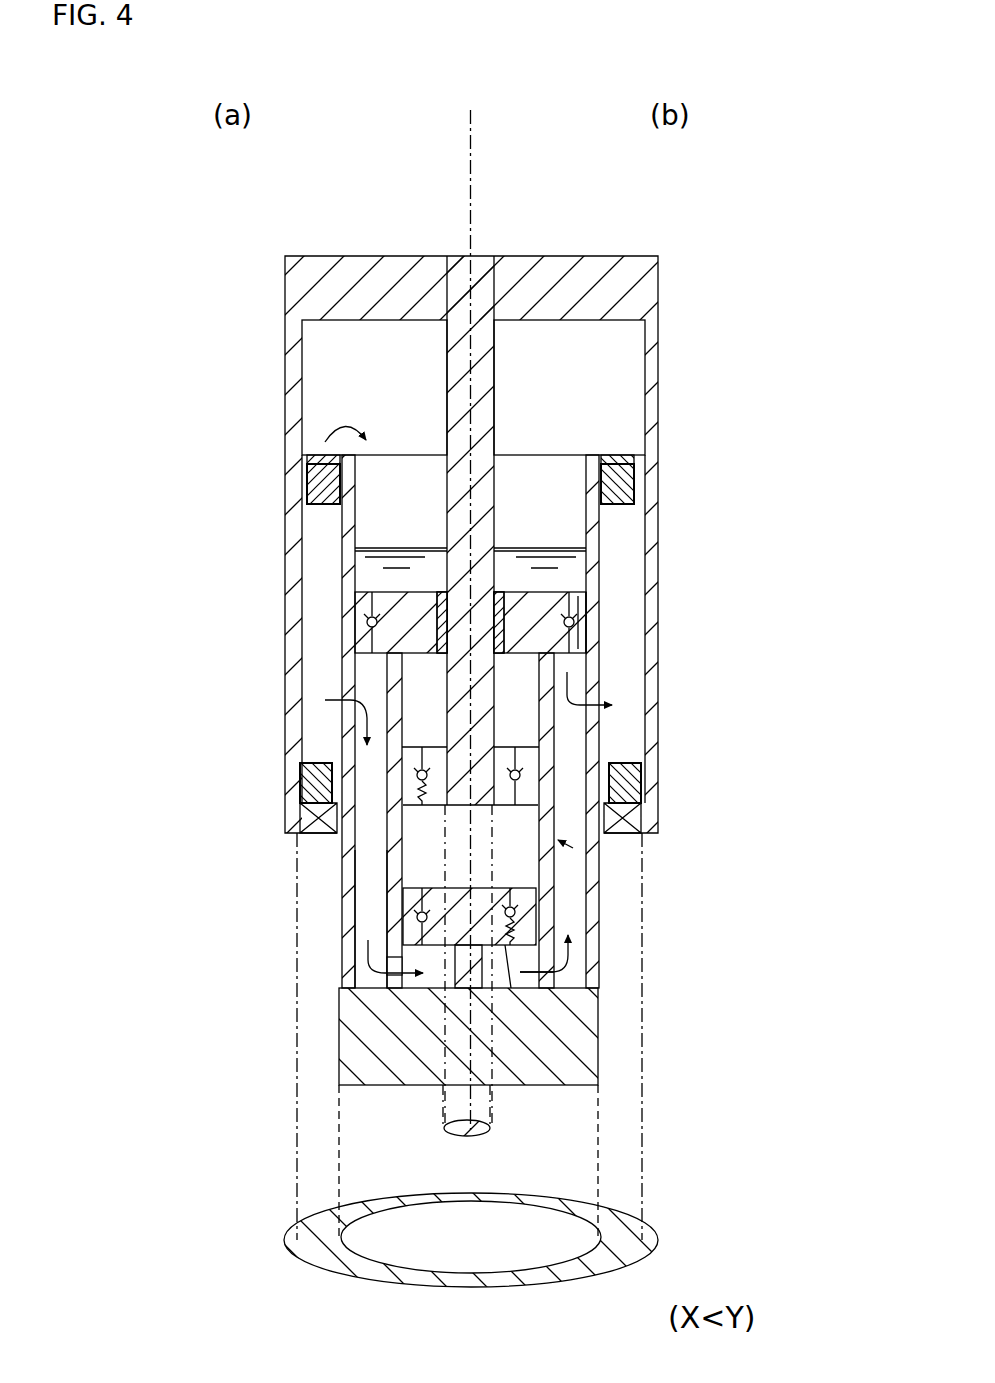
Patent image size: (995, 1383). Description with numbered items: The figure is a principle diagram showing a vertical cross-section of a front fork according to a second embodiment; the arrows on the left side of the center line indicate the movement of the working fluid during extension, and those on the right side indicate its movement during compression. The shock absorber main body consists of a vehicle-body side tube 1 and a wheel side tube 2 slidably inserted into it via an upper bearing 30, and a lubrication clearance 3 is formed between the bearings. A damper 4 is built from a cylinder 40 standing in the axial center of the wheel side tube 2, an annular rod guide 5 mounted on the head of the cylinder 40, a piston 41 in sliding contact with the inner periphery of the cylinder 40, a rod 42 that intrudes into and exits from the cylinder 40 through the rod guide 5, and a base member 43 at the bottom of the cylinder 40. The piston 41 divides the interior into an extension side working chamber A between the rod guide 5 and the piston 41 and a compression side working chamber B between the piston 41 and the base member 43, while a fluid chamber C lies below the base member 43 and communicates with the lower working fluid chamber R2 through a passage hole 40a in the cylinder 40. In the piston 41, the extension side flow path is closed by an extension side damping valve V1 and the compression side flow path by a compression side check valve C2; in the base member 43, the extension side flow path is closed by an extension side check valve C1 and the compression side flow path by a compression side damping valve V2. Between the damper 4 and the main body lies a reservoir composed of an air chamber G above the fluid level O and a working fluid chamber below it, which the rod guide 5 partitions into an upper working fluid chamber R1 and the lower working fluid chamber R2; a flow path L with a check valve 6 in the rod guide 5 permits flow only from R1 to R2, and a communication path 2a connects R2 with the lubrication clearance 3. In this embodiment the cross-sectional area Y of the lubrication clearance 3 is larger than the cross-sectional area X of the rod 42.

The vehicle-body side tube 1 is at (302, 450).
The air chamber G is at (590, 405).
The upper bearing 30 is at (633, 475).
The lubrication clearance 3 is at (622, 560).
The rod 42 is at (385, 525).
The fluid level O is at (520, 545).
The upper working fluid chamber R1 is at (370, 562).
The rod guide 5 is at (355, 633).
The check valve 6 is at (580, 618).
The flow path L is at (588, 637).
The cylinder 40 is at (395, 828).
The piston 41 is at (388, 880).
The extension side working chamber A is at (372, 690).
The wheel side tube 2 is at (337, 738).
The communication path 2a is at (600, 718).
The extension side damping valve V1 is at (415, 772).
The compression side check valve C2 is at (522, 777).
The compression side working chamber B is at (520, 870).
The damper 4 is at (585, 848).
The extension side check valve C1 is at (418, 922).
The compression side damping valve V2 is at (520, 907).
The passage hole 40a is at (548, 976).
The fluid chamber C is at (435, 988).
The base member 43 is at (558, 1035).
The lower working fluid chamber R2 is at (365, 905).
The cross-sectional area of the rod X is at (490, 1128).
The cross-sectional area of the lubrication clearance Y is at (658, 1240).